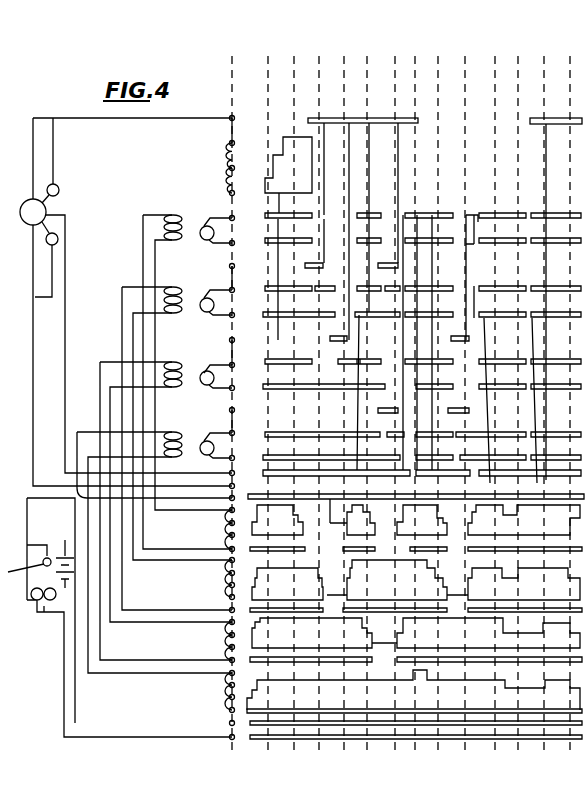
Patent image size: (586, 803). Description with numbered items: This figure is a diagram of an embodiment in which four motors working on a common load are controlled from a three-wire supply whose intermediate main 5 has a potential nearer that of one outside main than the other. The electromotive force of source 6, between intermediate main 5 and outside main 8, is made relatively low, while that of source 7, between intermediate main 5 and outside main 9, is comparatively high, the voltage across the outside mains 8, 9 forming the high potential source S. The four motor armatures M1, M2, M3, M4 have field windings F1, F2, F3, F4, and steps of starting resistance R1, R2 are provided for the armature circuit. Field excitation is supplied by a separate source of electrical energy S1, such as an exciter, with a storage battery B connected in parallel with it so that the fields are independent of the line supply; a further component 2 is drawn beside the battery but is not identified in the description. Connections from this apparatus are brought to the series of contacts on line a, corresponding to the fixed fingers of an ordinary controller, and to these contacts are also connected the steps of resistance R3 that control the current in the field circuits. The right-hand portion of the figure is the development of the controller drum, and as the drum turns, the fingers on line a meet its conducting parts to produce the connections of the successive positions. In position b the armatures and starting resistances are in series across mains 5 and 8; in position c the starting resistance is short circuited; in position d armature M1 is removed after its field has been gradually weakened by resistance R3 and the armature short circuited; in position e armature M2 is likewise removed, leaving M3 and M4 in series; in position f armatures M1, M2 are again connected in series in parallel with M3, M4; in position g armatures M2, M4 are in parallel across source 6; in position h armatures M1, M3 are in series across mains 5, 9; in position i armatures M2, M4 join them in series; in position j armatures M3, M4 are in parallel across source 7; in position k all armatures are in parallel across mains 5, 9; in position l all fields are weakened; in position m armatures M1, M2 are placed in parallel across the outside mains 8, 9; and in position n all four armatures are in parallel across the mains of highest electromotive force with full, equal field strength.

The outside main 8 is at (132, 158).
The outside main 9 is at (132, 355).
The intermediate main 5 is at (139, 344).
The source 6 is at (56, 189).
The source 7 is at (46, 259).
The high potential source S is at (33, 212).
The source of electrical energy S1 is at (28, 558).
The storage battery B is at (51, 610).
The relay coil 2 is at (129, 662).
The starting resistance R1 is at (214, 155).
The starting resistance R2 is at (214, 180).
The resistances R3 is at (215, 610).
The field winding F1 is at (187, 371).
The field winding F2 is at (177, 439).
The field winding F3 is at (166, 500).
The field winding F4 is at (154, 542).
The motor armature M1 is at (215, 218).
The motor armature M2 is at (215, 291).
The motor armature M3 is at (215, 364).
The motor armature M4 is at (215, 435).
The line of contacts a is at (230, 393).
The controller position b is at (266, 393).
The controller position c is at (292, 393).
The controller position d is at (317, 393).
The controller position e is at (342, 393).
The controller position f is at (364, 393).
The controller position g is at (393, 393).
The controller position h is at (413, 393).
The controller position i is at (436, 393).
The controller position j is at (461, 393).
The controller position k is at (493, 393).
The controller position l is at (516, 393).
The controller position m is at (544, 393).
The controller position n is at (568, 393).